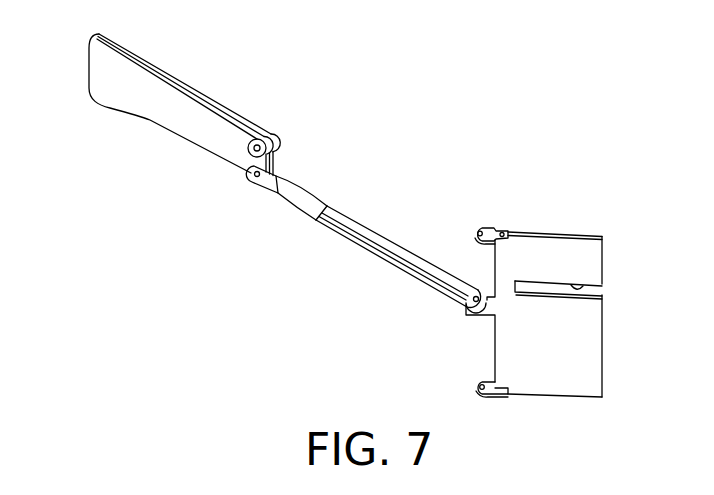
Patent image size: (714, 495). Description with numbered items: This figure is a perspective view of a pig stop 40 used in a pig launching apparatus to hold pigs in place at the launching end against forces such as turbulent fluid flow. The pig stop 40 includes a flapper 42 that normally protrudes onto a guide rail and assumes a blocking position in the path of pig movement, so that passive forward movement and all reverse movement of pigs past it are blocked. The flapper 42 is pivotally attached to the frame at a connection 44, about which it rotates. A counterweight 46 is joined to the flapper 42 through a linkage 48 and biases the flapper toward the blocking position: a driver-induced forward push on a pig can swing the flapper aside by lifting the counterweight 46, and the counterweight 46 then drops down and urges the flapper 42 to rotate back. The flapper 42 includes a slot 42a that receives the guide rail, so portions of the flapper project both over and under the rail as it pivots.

The pig stop 40 is at (407, 99).
The flapper 42 is at (547, 397).
The slot 42a is at (583, 285).
The connection 44 is at (483, 228).
The counterweight 46 is at (200, 146).
The linkage 48 is at (337, 232).